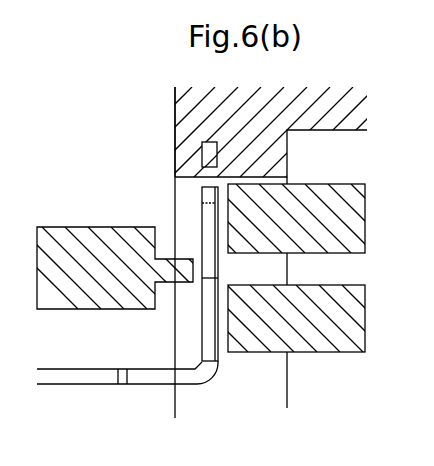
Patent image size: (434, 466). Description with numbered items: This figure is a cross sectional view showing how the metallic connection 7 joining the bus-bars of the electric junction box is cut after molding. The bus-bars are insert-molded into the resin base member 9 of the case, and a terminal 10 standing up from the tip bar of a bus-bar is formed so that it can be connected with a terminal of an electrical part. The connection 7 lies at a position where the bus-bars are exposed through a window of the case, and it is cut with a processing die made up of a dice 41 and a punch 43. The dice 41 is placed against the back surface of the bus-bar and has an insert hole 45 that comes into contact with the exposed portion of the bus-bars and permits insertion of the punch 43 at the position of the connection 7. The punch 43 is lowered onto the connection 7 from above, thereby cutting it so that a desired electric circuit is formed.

The base member 9 is at (192, 121).
The connection 7 is at (208, 262).
The punch 43 is at (81, 227).
The dice 41 is at (323, 352).
The insert hole 45 is at (285, 270).
The terminal 10 is at (66, 386).